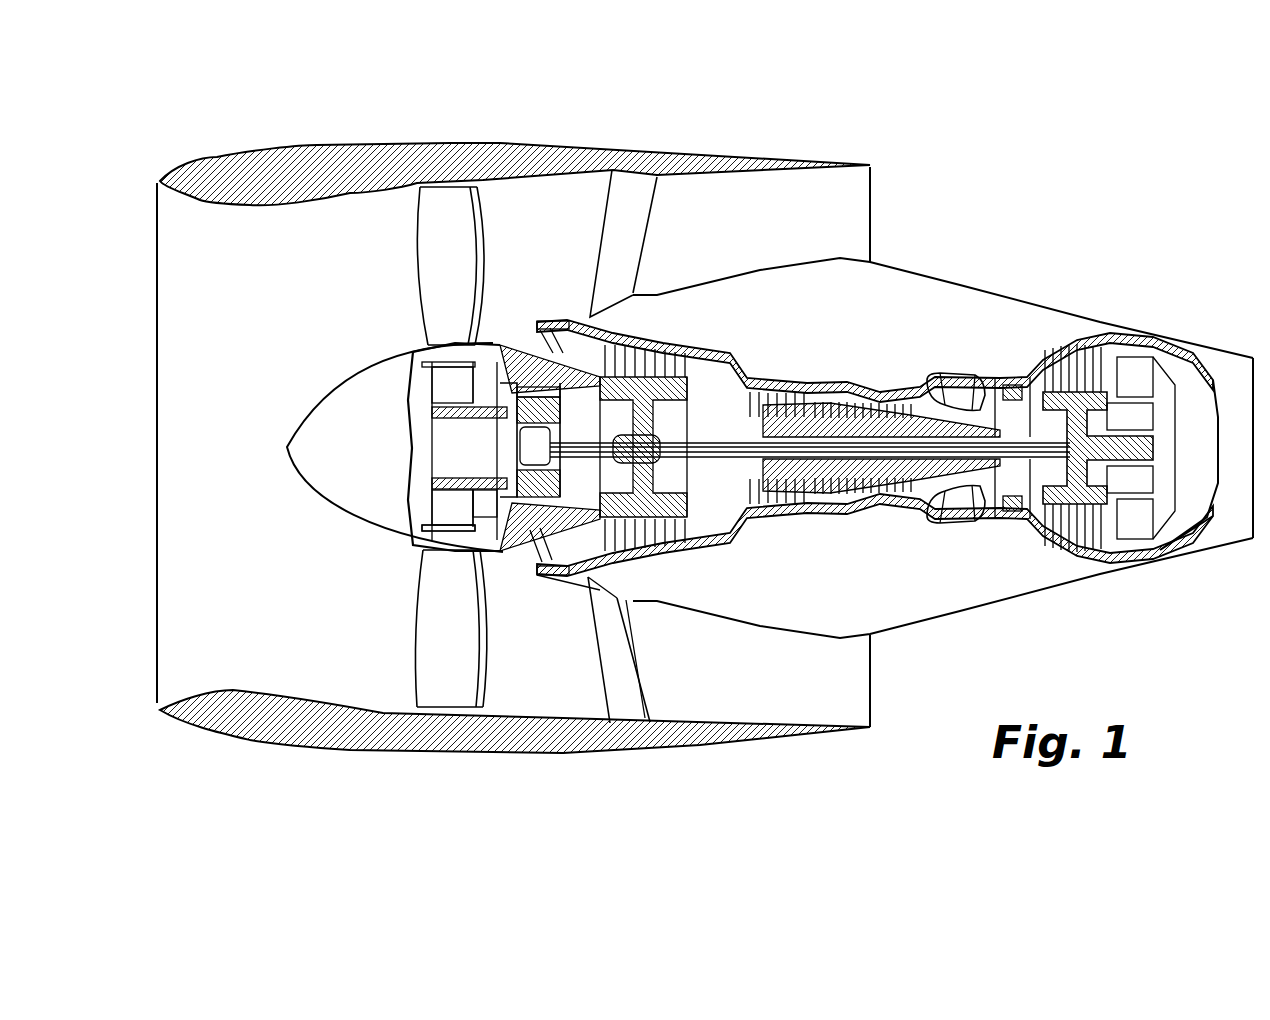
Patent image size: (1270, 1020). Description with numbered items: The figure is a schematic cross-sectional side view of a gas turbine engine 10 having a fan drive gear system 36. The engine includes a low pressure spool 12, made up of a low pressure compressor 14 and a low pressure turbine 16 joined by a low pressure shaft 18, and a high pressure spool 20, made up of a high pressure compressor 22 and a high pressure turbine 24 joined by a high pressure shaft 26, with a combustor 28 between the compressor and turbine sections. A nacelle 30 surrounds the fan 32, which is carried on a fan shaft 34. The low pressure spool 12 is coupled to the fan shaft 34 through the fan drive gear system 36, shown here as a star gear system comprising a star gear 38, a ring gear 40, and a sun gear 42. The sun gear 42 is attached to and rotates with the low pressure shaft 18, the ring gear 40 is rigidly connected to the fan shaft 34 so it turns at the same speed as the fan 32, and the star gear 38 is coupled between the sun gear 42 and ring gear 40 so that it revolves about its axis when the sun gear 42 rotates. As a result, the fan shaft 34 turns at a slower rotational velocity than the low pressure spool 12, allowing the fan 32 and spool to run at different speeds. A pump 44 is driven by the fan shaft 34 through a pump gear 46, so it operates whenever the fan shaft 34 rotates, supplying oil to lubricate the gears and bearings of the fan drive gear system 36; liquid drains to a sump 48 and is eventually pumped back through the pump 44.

The gas turbine engine 10 is at (723, 125).
The low pressure spool 12 is at (736, 462).
The low pressure compressor 14 is at (661, 345).
The low pressure turbine 16 is at (1080, 338).
The low pressure shaft 18 is at (705, 485).
The high pressure spool 20 is at (968, 470).
The high pressure compressor 22 is at (878, 390).
The high pressure turbine 24 is at (1001, 372).
The high pressure shaft 26 is at (905, 478).
The combustor 28 is at (959, 368).
The nacelle 30 is at (541, 317).
The fan 32 is at (445, 282).
The fan shaft 34 is at (481, 383).
The fan drive gear system 36 is at (510, 440).
The star gear 38 is at (552, 414).
The ring gear 40 is at (523, 510).
The sun gear 42 is at (562, 540).
The pump 44 is at (481, 510).
The pump gear 46 is at (485, 545).
The sump 48 is at (587, 560).